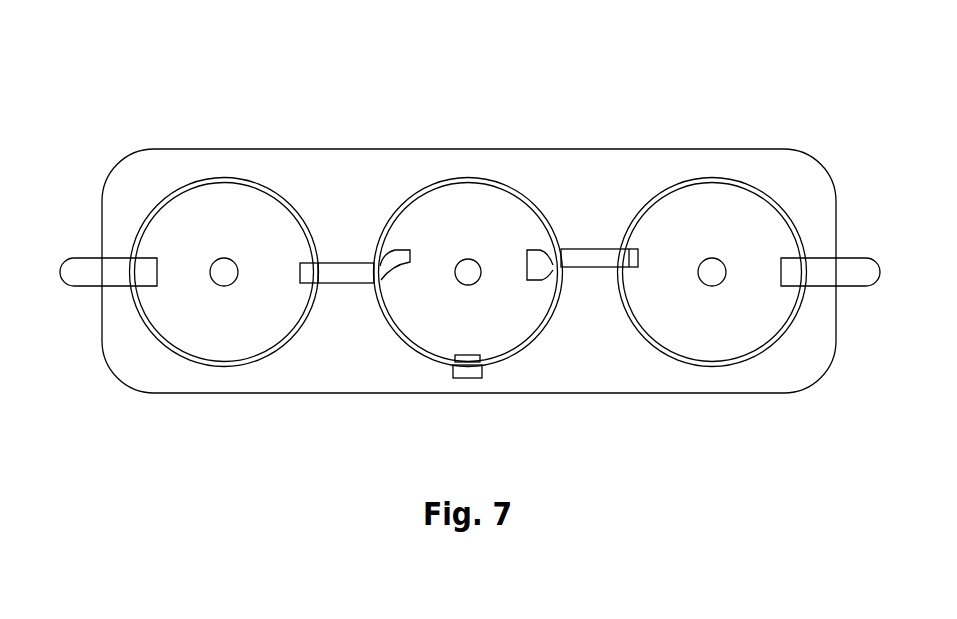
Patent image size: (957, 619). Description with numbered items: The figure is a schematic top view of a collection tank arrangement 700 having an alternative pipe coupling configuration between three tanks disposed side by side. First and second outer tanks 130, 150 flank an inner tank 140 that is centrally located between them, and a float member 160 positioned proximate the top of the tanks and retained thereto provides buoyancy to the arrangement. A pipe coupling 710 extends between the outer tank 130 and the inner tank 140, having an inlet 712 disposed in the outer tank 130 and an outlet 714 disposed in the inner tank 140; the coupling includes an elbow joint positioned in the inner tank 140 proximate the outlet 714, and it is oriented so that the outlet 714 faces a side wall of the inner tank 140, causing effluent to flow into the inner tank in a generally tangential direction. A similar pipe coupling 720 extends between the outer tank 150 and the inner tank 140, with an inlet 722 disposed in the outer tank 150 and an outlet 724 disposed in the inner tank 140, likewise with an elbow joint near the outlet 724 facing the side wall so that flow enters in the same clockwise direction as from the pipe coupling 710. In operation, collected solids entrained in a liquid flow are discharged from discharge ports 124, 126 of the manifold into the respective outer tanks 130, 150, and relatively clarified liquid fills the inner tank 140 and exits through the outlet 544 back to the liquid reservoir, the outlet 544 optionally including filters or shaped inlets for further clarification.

The collection tank arrangement 700 is at (258, 105).
The float member 160 is at (575, 180).
The first outer tank 130 is at (278, 193).
The inner tank 140 is at (500, 183).
The second outer tank 150 is at (747, 188).
The discharge port 124 is at (155, 276).
The discharge port 126 is at (782, 273).
The pipe coupling 710 is at (288, 365).
The inlet 712 is at (298, 271).
The outlet 714 is at (410, 258).
The pipe coupling 720 is at (644, 327).
The inlet 722 is at (638, 258).
The outlet 724 is at (527, 277).
The outlet 544 is at (468, 378).